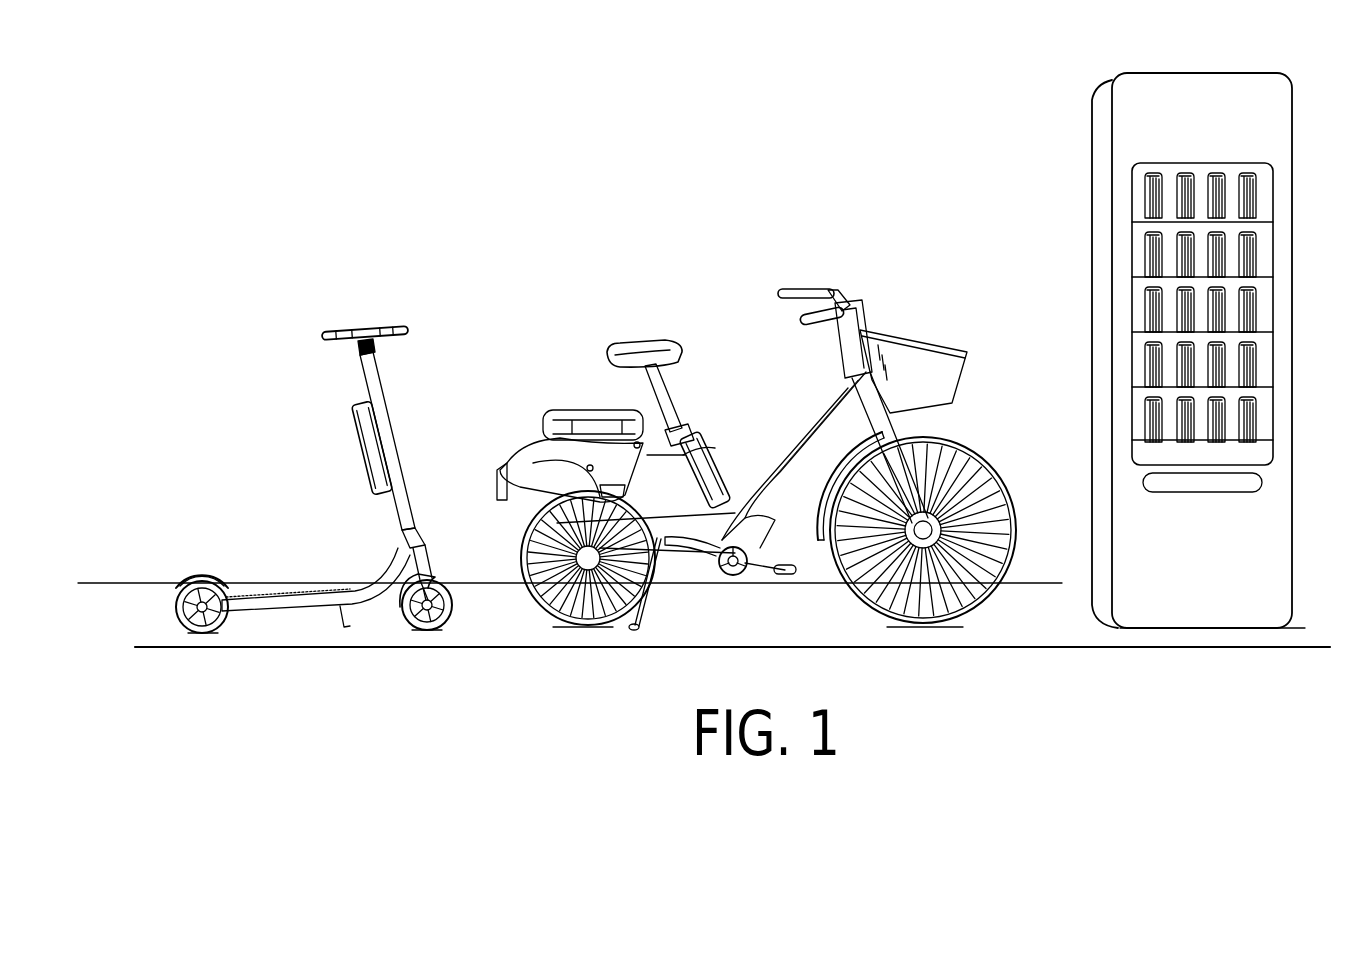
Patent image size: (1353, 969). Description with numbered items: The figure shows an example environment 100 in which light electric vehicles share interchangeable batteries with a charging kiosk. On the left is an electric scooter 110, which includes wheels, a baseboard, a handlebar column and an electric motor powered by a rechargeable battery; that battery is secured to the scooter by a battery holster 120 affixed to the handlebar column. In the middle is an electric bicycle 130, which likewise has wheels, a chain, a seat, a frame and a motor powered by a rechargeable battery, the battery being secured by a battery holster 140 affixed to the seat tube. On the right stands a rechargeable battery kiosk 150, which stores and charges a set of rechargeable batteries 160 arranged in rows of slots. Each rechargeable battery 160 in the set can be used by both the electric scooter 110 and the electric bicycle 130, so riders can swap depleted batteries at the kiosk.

The environment 100 is at (264, 64).
The electric scooter 110 is at (357, 377).
The battery holster 120 is at (360, 458).
The electric bicycle 130 is at (606, 360).
The battery holster 140 is at (698, 440).
The rechargeable battery kiosk 150 is at (1092, 127).
The rechargeable batteries 160 is at (1142, 262).